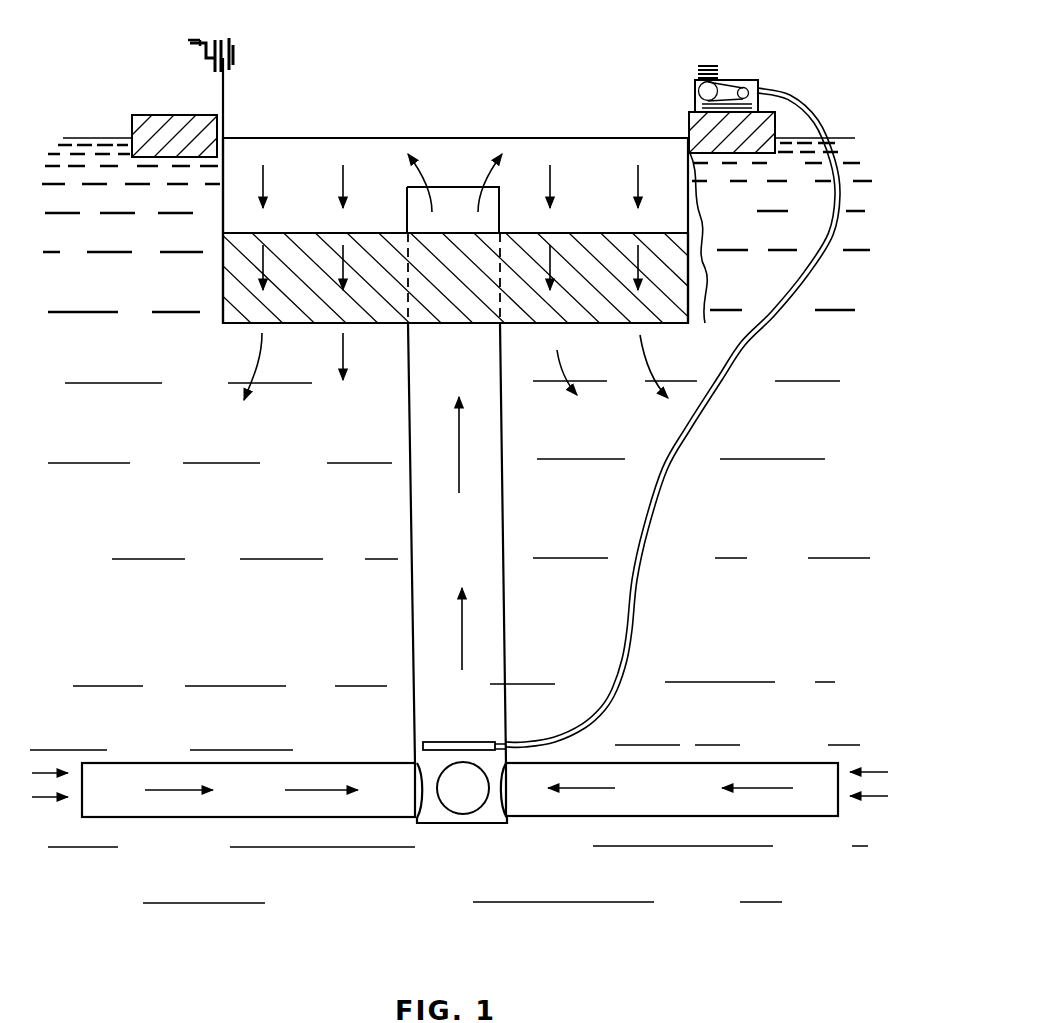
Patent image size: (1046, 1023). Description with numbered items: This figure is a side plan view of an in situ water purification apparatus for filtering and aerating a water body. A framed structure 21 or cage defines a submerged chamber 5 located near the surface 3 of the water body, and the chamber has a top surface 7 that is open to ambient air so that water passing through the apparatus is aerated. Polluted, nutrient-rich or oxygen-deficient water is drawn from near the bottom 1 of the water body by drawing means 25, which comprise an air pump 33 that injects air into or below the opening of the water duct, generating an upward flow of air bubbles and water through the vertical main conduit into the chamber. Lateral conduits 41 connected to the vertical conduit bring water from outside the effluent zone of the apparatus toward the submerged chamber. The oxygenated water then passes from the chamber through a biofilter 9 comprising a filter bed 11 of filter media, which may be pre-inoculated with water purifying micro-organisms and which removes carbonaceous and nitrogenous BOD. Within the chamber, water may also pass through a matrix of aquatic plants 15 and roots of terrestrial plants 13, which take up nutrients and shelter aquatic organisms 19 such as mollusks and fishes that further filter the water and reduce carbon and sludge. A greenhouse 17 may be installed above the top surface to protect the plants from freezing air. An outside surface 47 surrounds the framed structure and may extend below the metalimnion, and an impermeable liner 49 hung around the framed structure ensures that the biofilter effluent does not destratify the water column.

The bottom of the water body 1 is at (178, 203).
The surface of the water body 3 is at (318, 188).
The submerged chamber 5 is at (290, 255).
The top surface of the submerged chamber 7 is at (702, 211).
The biofilter 9 is at (393, 500).
The filter bed 11 is at (740, 18).
The roots of terrestrial plants 13 is at (836, 229).
The aquatic plants 15 is at (447, 743).
The greenhouse 17 is at (225, 172).
The aquatic organisms 19 is at (148, 132).
The framed structure 21 is at (233, 55).
The drawing means 25 is at (223, 293).
The air pump 33 is at (520, 138).
The lateral conduits 41 is at (740, 82).
The outside surface 47 is at (476, 520).
The impermeable liner 49 is at (674, 780).